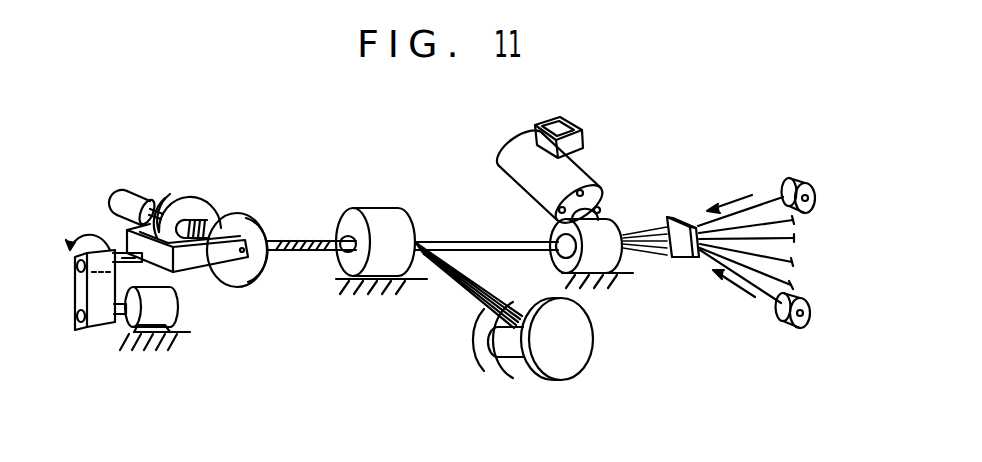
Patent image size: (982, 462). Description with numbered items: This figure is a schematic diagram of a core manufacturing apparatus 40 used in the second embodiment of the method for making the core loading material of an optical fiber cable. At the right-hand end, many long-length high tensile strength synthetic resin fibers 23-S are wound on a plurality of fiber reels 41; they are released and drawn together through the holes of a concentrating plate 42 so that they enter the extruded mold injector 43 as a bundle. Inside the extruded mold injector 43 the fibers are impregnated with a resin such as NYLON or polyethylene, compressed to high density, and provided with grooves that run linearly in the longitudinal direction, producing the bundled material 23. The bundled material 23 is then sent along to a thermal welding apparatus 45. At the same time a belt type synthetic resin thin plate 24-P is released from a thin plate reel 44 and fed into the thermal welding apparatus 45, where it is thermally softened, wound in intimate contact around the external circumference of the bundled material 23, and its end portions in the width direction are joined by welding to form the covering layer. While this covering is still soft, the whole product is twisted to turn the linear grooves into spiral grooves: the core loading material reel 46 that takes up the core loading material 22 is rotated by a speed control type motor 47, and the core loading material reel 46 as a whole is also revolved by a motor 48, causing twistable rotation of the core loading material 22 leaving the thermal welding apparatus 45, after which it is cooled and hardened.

The core loading material 22 is at (295, 258).
The bundled material 23 is at (492, 240).
The high tensile strength synthetic resin fibers 23-S is at (763, 299).
The synthetic resin thin plate 24-P is at (448, 279).
The core manufacturing apparatus 40 is at (407, 184).
The fiber reels 41 is at (788, 178).
The concentrating plate 42 is at (673, 215).
The extruded mold injector 43 is at (610, 234).
The thin plate reel 44 is at (570, 352).
The thermal welding apparatus 45 is at (380, 216).
The core loading material reel 46 is at (213, 194).
The speed control type motor 47 is at (128, 193).
The motor 48 is at (167, 303).